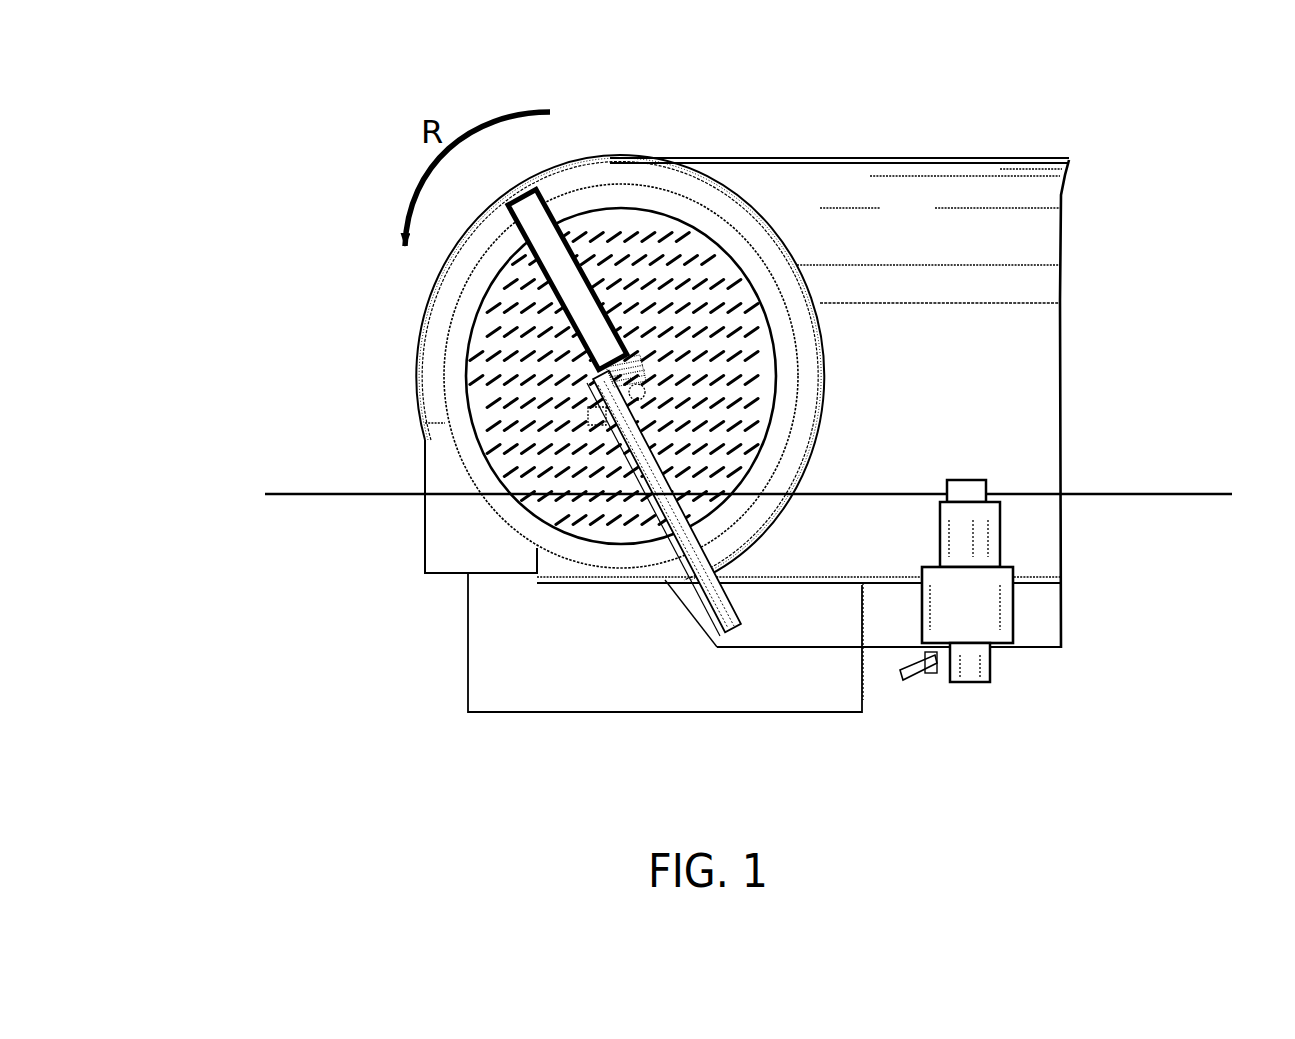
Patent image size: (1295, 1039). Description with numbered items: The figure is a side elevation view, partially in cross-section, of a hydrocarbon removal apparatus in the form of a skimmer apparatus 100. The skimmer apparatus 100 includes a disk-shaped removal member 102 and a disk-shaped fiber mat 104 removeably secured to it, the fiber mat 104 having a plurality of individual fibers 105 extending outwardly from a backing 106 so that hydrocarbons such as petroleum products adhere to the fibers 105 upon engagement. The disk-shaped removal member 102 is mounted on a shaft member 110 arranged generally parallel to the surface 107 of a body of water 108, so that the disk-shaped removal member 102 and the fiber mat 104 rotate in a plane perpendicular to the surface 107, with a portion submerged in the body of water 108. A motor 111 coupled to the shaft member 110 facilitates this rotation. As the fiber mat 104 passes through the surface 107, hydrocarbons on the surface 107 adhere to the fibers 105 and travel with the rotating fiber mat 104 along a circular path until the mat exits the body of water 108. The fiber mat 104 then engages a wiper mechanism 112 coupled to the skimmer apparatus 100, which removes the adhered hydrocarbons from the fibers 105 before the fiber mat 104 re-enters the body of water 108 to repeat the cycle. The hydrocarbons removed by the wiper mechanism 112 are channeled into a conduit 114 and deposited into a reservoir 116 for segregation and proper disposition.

The skimmer apparatus 100 is at (368, 206).
The disk-shaped removal member 102 is at (465, 303).
The fiber mat 104 is at (452, 387).
The fibers 105 is at (763, 375).
The backing 106 is at (753, 316).
The surface 107 is at (1160, 494).
The body of water 108 is at (368, 701).
The shaft member 110 is at (648, 368).
The motor 111 is at (640, 385).
The wiper mechanism 112 is at (552, 232).
The conduit 114 is at (705, 580).
The reservoir 116 is at (1040, 615).